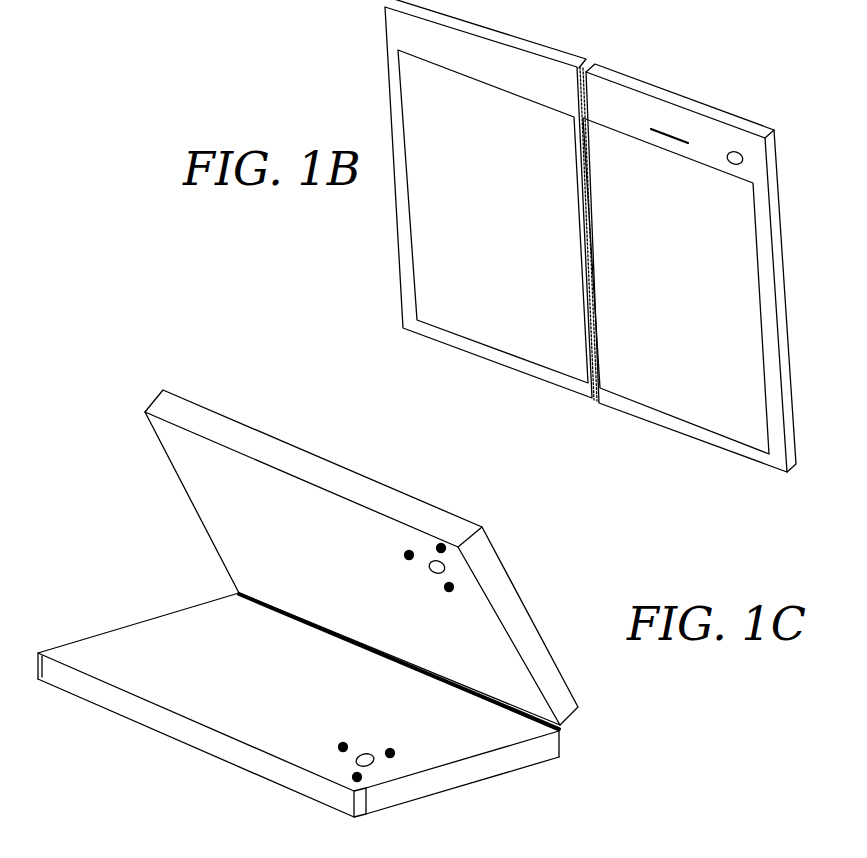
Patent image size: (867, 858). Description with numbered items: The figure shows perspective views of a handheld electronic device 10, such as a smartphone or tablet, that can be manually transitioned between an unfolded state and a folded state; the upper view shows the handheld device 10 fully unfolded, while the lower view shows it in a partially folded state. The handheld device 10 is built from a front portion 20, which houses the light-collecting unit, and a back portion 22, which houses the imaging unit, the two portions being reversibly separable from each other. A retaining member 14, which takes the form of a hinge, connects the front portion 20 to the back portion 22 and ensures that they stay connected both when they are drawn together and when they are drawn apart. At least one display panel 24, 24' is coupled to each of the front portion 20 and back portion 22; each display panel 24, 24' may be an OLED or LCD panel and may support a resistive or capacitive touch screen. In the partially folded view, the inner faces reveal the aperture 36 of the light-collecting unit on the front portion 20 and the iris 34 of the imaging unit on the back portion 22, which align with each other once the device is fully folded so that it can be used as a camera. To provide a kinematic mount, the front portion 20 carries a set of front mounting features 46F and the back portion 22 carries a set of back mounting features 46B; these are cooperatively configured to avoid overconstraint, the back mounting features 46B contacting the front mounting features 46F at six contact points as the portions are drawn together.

In FIG. 1B, the handheld electronic device 10 is at (355, 266).
In FIG. 1C, the handheld electronic device 10 is at (140, 571).
In FIG. 1C, the retaining member 14 is at (370, 652).
In FIG. 1B, the front portion 20 is at (677, 93).
In FIG. 1C, the front portion 20 is at (496, 547).
In FIG. 1B, the back portion 22 is at (485, 18).
In FIG. 1C, the back portion 22 is at (243, 769).
In FIG. 1B, the display panel 24 is at (676, 286).
In FIG. 1B, the display panel 24' is at (493, 216).
In FIG. 1C, the iris 34 is at (356, 766).
In FIG. 1B, the aperture 36 is at (727, 163).
In FIG. 1C, the aperture 36 is at (429, 568).
In FIG. 1C, the back mounting features 46B is at (411, 727).
In FIG. 1C, the front mounting features 46F is at (448, 590).